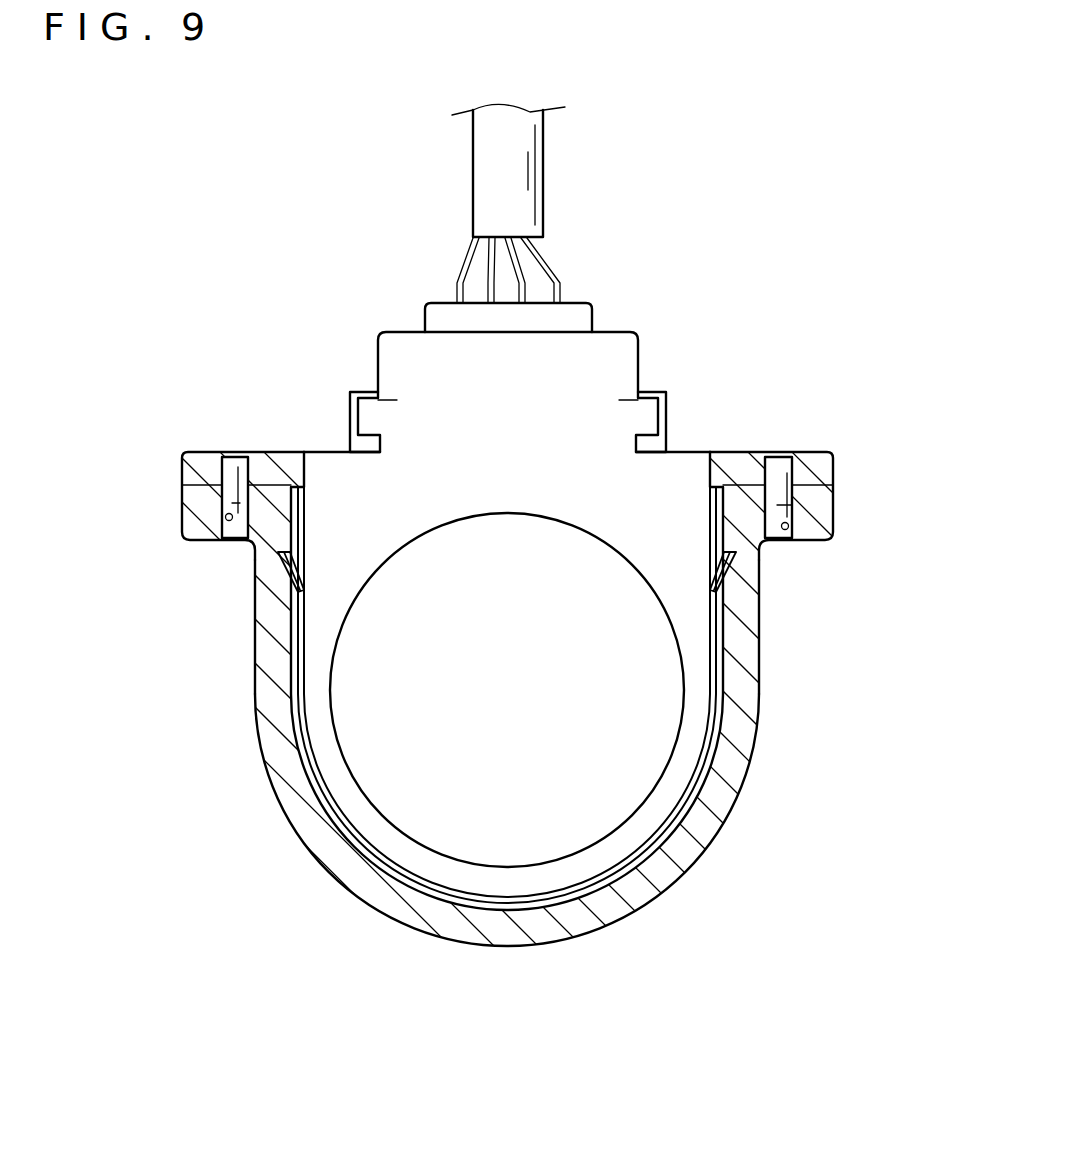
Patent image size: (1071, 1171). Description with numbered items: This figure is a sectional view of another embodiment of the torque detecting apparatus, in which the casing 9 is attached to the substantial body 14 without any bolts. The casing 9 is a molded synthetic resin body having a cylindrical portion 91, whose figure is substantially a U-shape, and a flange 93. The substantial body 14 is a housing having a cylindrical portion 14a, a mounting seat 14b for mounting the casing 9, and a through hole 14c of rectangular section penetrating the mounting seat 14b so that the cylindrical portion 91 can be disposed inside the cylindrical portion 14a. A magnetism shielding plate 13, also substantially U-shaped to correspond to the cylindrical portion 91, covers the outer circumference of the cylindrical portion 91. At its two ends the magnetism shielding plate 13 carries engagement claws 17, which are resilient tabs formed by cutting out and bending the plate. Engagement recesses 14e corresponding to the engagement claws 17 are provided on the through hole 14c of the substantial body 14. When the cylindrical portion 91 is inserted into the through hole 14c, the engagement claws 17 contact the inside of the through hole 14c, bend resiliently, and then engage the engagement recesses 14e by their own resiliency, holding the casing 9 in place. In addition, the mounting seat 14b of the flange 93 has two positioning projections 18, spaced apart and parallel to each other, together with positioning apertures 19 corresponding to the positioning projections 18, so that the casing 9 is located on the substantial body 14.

The casing 9 is at (638, 833).
The magnetism shielding plate 13 is at (722, 702).
The substantial body 14 is at (740, 809).
The cylindrical portion 14a is at (600, 910).
The mounting seat 14b is at (190, 478).
The through hole 14c is at (710, 505).
The engagement recess 14e is at (257, 590).
The engagement claw 17 is at (285, 565).
The positioning projection 18 is at (230, 505).
The positioning aperture 19 is at (225, 520).
The cylindrical portion 91 is at (388, 852).
The flange 93 is at (203, 450).